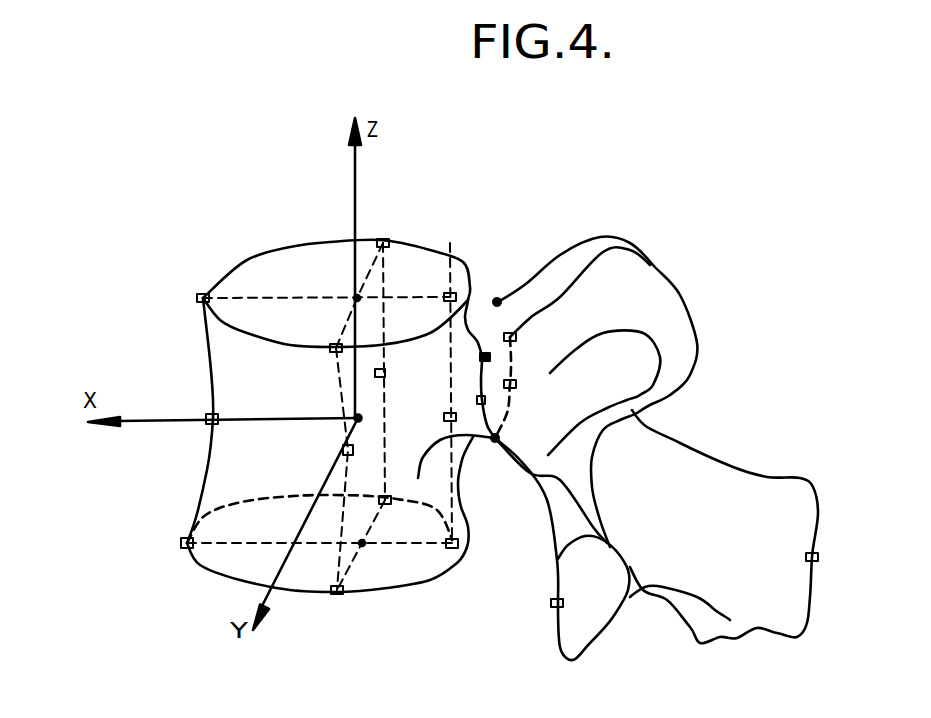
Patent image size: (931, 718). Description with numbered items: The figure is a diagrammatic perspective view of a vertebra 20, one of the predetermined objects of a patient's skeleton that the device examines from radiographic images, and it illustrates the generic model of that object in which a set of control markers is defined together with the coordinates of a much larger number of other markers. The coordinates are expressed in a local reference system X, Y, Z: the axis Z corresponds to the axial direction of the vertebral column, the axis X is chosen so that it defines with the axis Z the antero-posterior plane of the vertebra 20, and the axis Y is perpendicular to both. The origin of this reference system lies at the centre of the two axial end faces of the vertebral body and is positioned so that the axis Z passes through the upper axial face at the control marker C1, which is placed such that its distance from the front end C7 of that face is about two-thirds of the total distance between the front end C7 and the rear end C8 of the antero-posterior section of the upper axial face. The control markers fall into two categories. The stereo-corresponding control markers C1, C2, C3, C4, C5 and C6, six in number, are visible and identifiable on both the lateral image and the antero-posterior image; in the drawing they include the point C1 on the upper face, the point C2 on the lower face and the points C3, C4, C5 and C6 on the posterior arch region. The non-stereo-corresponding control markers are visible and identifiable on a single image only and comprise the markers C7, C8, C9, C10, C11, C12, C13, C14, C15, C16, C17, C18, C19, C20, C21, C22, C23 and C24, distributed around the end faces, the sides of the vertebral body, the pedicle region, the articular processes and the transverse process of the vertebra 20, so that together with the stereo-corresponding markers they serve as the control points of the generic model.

The vertebra 20 is at (195, 253).
The stereo-corresponding control marker C1 is at (357, 298).
The stereo-corresponding control marker C2 is at (362, 545).
The stereo-corresponding control marker C3 is at (500, 300).
The stereo-corresponding control marker C4 is at (493, 441).
The stereo-corresponding control marker C5 is at (495, 300).
The stereo-corresponding control marker C6 is at (497, 441).
The front end of the upper axial face C7 is at (200, 296).
The rear end of the upper axial face C8 is at (450, 292).
The non-stereo-corresponding control marker C9 is at (183, 542).
The non-stereo-corresponding control marker C10 is at (452, 547).
The non-stereo-corresponding control marker C11 is at (207, 423).
The non-stereo-corresponding control marker C12 is at (444, 417).
The non-stereo-corresponding control marker C13 is at (815, 559).
The non-stereo-corresponding control marker C14 is at (333, 349).
The non-stereo-corresponding control marker C15 is at (385, 243).
The non-stereo-corresponding control marker C16 is at (338, 594).
The non-stereo-corresponding control marker C17 is at (387, 503).
The non-stereo-corresponding control marker C18 is at (345, 451).
The non-stereo-corresponding control marker C19 is at (377, 373).
The non-stereo-corresponding control marker C20 is at (480, 399).
The non-stereo-corresponding control marker C21 is at (514, 386).
The non-stereo-corresponding control marker C22 is at (488, 357).
The non-stereo-corresponding control marker C23 is at (512, 335).
The non-stereo-corresponding control marker C24 is at (553, 606).